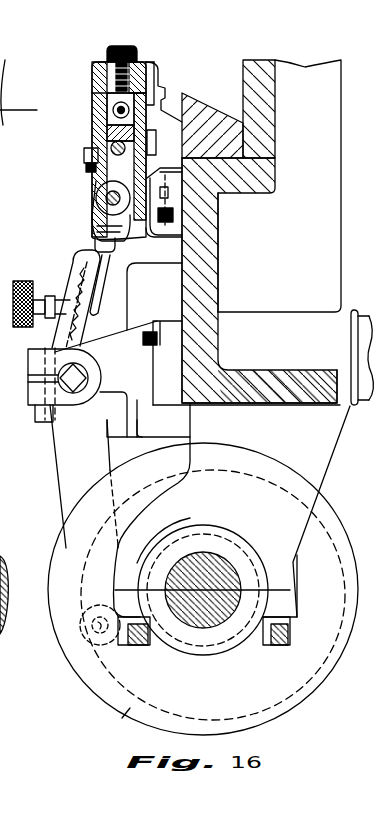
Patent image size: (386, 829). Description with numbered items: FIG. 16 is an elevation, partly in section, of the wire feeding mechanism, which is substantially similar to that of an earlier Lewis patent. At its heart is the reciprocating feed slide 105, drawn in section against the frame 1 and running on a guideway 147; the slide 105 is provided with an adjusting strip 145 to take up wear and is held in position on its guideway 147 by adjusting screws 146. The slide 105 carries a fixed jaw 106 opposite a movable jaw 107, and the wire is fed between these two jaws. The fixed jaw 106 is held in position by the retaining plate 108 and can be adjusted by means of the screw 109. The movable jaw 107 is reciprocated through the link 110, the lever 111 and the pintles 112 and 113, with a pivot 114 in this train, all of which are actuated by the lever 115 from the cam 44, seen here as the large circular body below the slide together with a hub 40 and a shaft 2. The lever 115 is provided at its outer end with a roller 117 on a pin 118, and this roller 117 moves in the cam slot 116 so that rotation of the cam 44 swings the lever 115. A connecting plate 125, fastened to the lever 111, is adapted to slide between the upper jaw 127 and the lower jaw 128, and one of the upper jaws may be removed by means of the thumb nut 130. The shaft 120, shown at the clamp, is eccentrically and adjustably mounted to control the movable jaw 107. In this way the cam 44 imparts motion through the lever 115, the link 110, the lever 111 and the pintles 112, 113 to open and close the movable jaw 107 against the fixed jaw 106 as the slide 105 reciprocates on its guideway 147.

The frame 1 is at (206, 268).
The shaft 2 is at (370, 314).
The hub 40 is at (206, 552).
The cam 44 is at (305, 690).
The feed slide 105 is at (162, 90).
The fixed jaw 106 is at (107, 94).
The movable jaw 107 is at (112, 117).
The retaining plate 108 is at (104, 136).
The screw 109 is at (107, 50).
The link 110 is at (92, 148).
The lever 111 is at (92, 214).
The pintle 112 is at (156, 130).
The pintle 113 is at (156, 160).
The pivot pin 114 is at (98, 195).
The lever 115 is at (66, 477).
The cam slot 116 is at (122, 716).
The roller 117 is at (108, 650).
The pin 118 is at (100, 627).
The shaft 120 is at (88, 378).
The connecting plate 125 is at (95, 242).
The upper jaw 127 is at (87, 254).
The lower jaw 128 is at (122, 257).
The thumb nut 130 is at (32, 285).
The adjusting strip 145 is at (215, 200).
The adjusting screws 146 is at (182, 238).
The guideway 147 is at (168, 114).